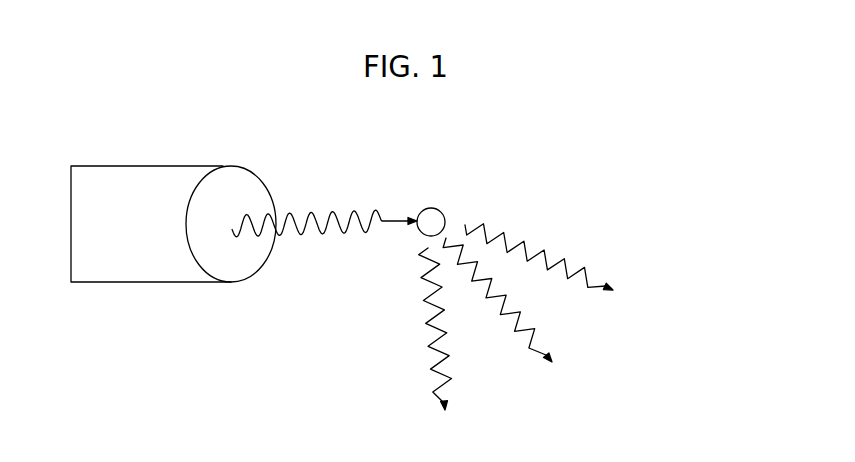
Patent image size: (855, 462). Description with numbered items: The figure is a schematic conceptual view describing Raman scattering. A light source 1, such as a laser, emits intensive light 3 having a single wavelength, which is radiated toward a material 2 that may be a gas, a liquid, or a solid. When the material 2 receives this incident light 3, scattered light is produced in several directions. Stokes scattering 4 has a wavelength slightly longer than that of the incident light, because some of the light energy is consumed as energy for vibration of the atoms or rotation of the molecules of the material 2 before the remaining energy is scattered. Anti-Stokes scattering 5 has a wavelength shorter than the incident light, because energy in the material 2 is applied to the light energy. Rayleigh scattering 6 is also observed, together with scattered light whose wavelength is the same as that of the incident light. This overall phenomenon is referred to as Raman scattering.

The light source 1 is at (222, 188).
The material 2 is at (431, 208).
The intensive light 3 is at (332, 210).
The Stokes scattering 4 is at (422, 320).
The anti-Stokes scattering 5 is at (503, 225).
The Rayleigh scattering 6 is at (522, 335).